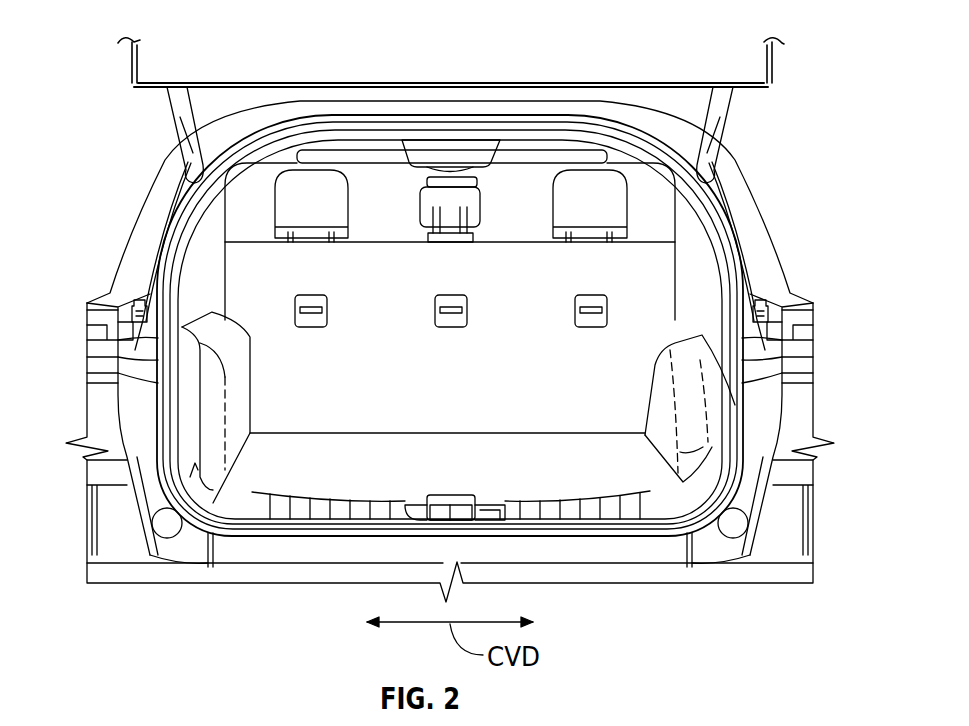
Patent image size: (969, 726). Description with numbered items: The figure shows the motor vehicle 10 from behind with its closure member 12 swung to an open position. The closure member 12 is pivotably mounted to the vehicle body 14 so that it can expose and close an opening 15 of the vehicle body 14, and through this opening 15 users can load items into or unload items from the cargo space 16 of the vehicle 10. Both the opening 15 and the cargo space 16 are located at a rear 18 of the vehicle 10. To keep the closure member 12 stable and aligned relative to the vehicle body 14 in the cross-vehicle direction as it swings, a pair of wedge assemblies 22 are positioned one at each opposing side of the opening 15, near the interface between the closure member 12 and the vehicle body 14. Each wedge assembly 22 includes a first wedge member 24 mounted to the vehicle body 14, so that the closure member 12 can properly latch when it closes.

The motor vehicle 10 is at (833, 136).
The closure member 12 is at (767, 67).
The vehicle body 14 is at (737, 262).
The opening 15 is at (241, 530).
The cargo space 16 is at (607, 470).
The rear 18 is at (113, 487).
The wedge assembly 22 is at (134, 349).
The first wedge member 24 is at (140, 337).